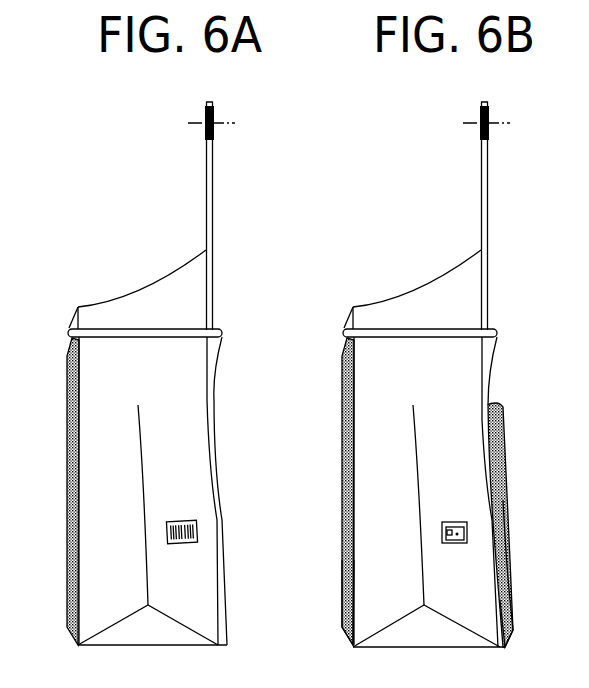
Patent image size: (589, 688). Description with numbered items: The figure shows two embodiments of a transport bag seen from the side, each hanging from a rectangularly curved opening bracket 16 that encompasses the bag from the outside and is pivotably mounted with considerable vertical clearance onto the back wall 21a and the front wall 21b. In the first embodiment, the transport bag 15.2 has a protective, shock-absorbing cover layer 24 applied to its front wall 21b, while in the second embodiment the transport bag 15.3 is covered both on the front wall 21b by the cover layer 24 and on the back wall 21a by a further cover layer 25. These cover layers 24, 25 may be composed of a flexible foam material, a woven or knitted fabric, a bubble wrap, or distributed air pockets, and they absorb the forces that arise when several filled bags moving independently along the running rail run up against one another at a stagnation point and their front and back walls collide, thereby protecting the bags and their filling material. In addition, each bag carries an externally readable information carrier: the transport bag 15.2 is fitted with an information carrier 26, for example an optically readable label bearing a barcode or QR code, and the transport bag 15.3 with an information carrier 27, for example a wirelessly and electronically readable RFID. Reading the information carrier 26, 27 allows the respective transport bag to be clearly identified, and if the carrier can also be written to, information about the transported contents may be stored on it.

In FIG. 6A, the transport bag 15.2 is at (128, 282).
In FIG. 6B, the transport bag 15.3 is at (403, 282).
In FIG. 6A, the opening bracket 16 is at (110, 333).
In FIG. 6B, the opening bracket 16 is at (385, 333).
In FIG. 6A, the cover layer 24 is at (73, 530).
In FIG. 6B, the cover layer 24 is at (347, 532).
In FIG. 6A, the information carrier 26 is at (198, 538).
In FIG. 6B, the information carrier 27 is at (467, 540).
In FIG. 6B, the back wall 21a is at (490, 445).
In FIG. 6B, the front wall 21b is at (351, 588).
In FIG. 6B, the cover layer 25 is at (503, 500).